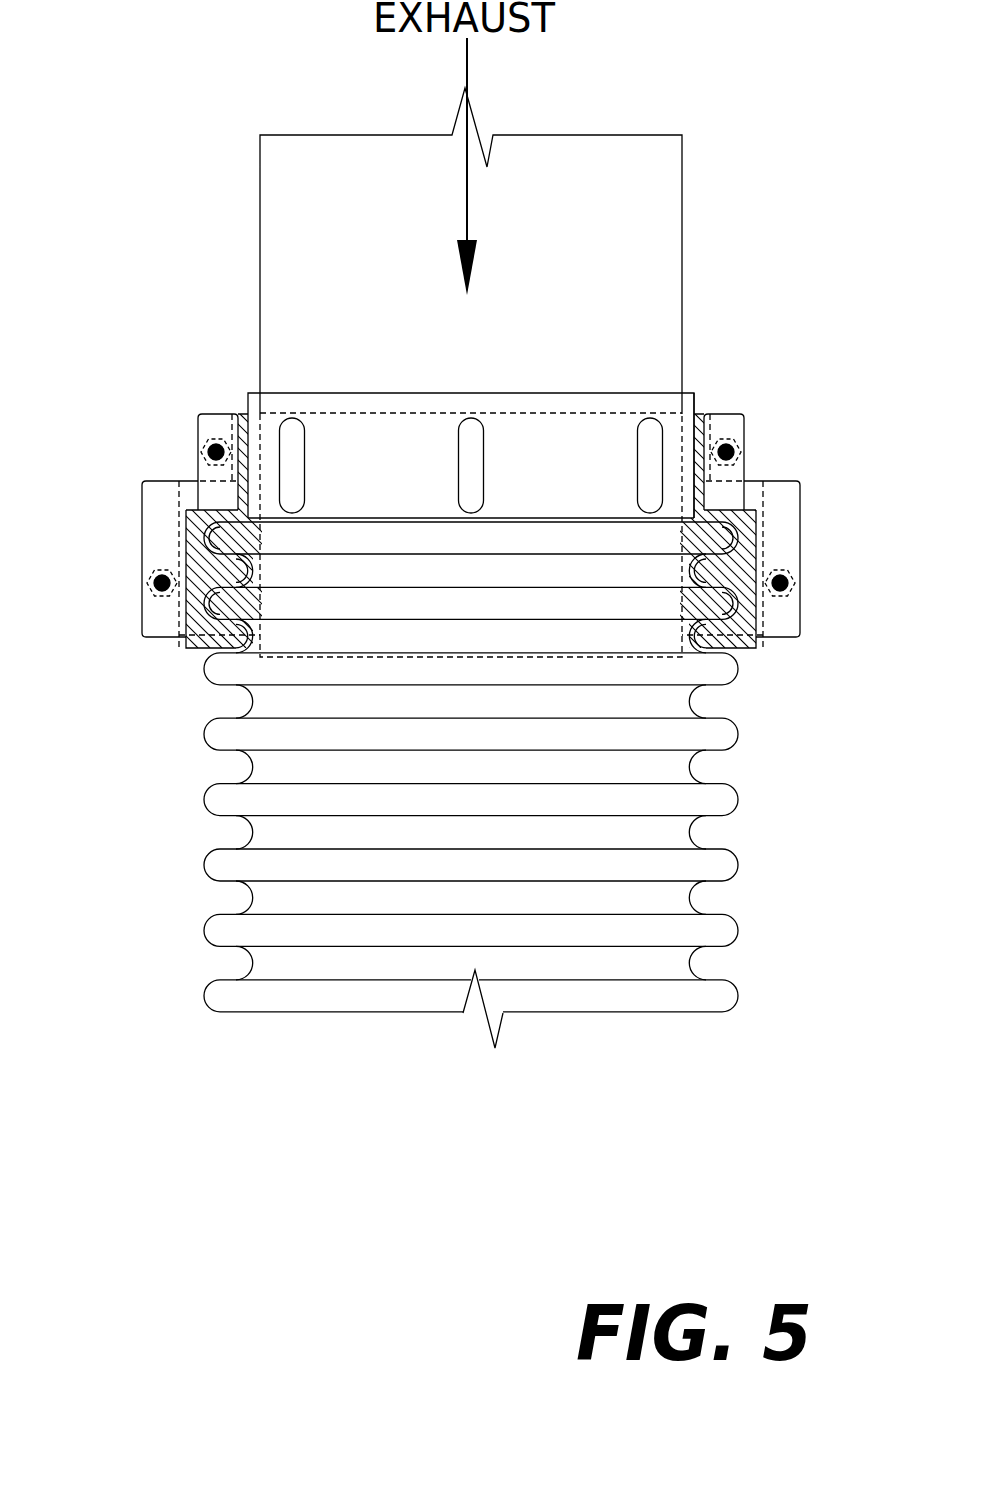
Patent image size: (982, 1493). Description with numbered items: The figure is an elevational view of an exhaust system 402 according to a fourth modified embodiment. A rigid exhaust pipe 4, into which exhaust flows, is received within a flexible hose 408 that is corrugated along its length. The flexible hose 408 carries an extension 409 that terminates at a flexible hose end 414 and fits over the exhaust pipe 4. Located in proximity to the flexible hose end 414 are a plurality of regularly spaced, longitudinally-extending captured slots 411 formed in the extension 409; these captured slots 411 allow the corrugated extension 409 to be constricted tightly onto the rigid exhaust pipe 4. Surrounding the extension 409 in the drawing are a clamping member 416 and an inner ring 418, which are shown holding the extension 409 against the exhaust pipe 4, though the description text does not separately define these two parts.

The exhaust pipe 4 is at (682, 135).
The exhaust system 402 is at (155, 287).
The flexible hose 408 is at (712, 1013).
The extension 409 is at (688, 393).
The captured slots 411 is at (658, 468).
The flexible hose end 414 is at (493, 393).
The clamp 416 is at (765, 417).
The gasket 418 is at (756, 648).